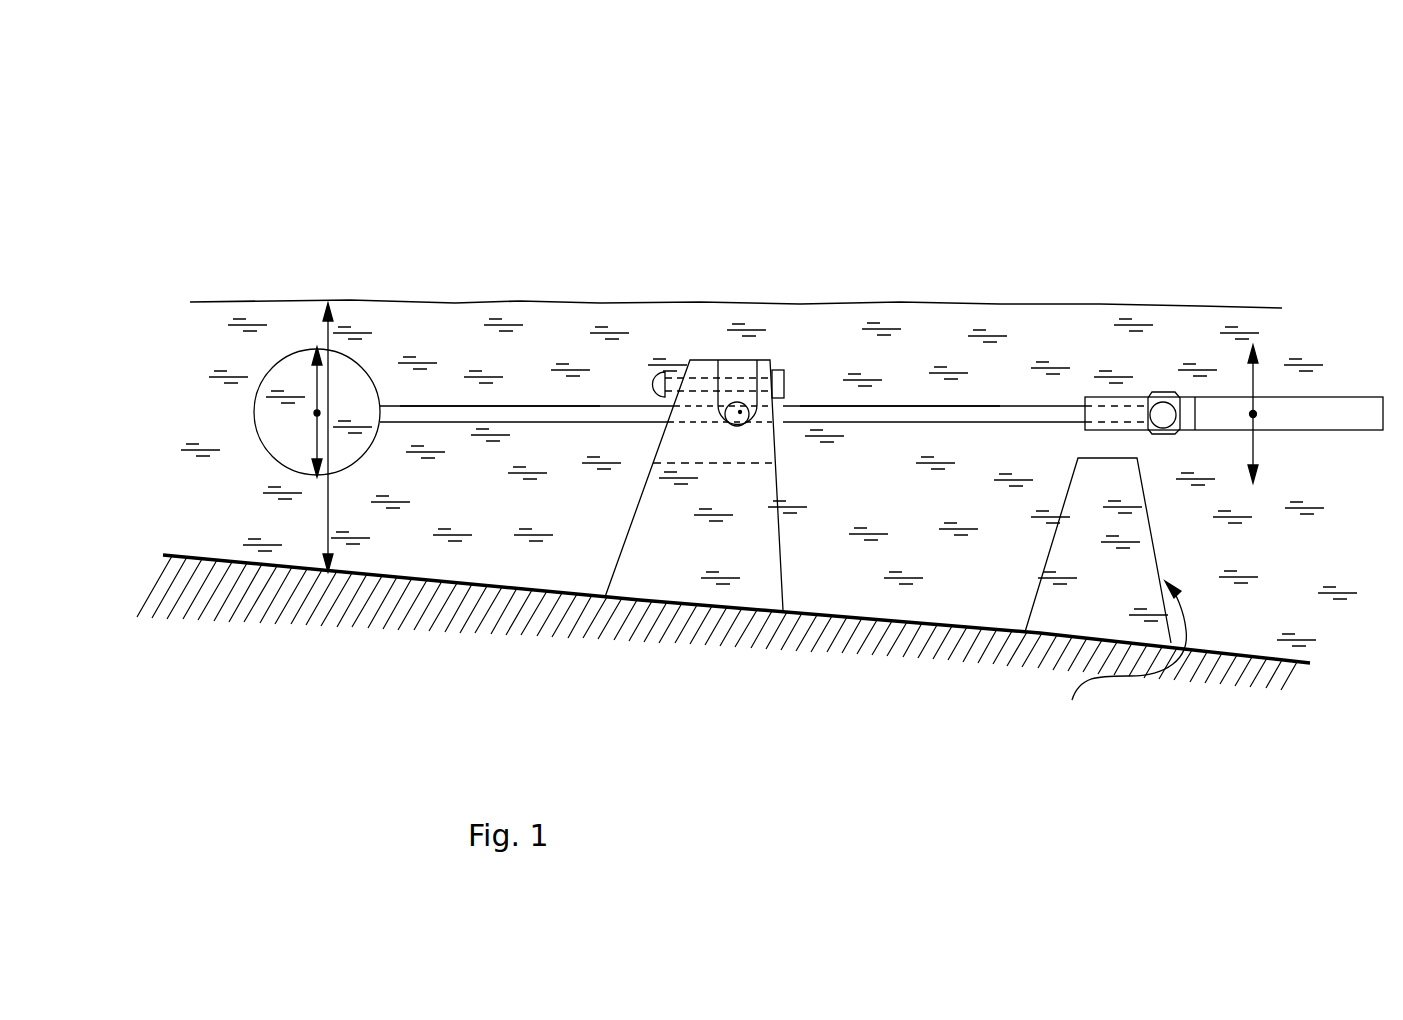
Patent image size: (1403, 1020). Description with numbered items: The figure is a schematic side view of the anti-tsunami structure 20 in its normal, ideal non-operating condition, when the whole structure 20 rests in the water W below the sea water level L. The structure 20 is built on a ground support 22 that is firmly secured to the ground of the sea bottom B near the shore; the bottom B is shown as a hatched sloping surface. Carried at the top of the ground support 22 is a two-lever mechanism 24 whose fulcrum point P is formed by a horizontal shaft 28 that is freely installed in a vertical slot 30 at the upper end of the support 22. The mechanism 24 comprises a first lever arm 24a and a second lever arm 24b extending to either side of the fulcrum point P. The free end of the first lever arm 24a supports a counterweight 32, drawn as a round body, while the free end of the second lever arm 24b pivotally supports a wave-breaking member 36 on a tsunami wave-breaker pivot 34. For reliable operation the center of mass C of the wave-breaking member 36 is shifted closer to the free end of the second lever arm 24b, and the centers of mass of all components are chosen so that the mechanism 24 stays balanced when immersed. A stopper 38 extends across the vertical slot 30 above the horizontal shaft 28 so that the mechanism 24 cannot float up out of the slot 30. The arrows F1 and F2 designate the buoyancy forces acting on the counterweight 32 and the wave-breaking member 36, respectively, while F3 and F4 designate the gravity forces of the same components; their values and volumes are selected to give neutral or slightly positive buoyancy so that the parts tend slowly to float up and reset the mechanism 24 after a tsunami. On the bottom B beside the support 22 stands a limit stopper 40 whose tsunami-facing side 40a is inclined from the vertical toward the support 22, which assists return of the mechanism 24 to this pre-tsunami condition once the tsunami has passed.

The anti-tsunami structure 20 is at (766, 250).
The ground support 22 is at (670, 565).
The two-lever mechanism 24 is at (1001, 384).
The first lever arm 24a is at (510, 406).
The second lever arm 24b is at (916, 406).
The horizontal shaft 28 is at (736, 426).
The vertical slot 30 is at (730, 370).
The counterweight 32 is at (347, 380).
The tsunami wave-breaker pivot 34 is at (1166, 429).
The wave-breaking member 36 is at (1185, 374).
The stopper 38 is at (652, 377).
The limit stopper 40 is at (1145, 508).
The tsunami-facing side 40a is at (1130, 659).
The water level L is at (453, 303).
The water W is at (413, 557).
The sea/ocean bottom B is at (826, 618).
The fulcrum point P is at (741, 410).
The center of mass C is at (1256, 411).
The buoyancy force F1 is at (312, 365).
The buoyancy force F2 is at (1251, 381).
The gravity force F3 is at (318, 440).
The gravity force F4 is at (1257, 445).